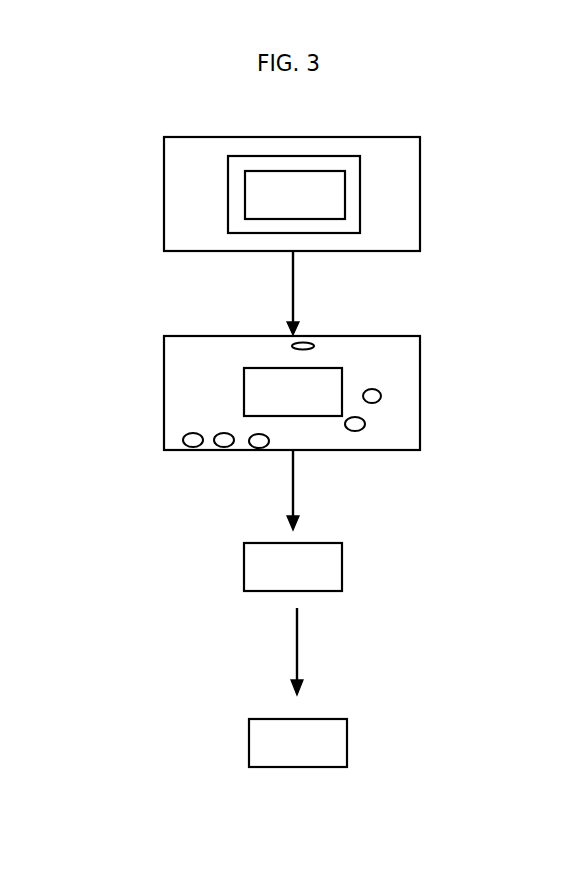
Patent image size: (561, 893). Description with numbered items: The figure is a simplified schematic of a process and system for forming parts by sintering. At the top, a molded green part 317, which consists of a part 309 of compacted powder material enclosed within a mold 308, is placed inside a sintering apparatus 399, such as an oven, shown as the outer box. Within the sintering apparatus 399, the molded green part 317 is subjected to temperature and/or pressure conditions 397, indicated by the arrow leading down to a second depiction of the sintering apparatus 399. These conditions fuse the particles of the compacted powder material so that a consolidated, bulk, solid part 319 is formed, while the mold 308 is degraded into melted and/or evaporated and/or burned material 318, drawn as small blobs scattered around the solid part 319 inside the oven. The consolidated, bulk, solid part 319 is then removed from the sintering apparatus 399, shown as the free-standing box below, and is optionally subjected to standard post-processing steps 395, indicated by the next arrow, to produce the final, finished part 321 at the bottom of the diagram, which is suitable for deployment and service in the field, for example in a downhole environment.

The molded green part 317 is at (215, 183).
The mold 308 is at (360, 194).
The part 309 is at (296, 219).
The sintering apparatus 399 is at (420, 193).
The temperature and/or pressure conditions 397 is at (292, 292).
The melted and/or evaporated and/or burned material 318 is at (315, 346).
The consolidated, bulk, solid part 319 is at (296, 416).
The post-processing steps 395 is at (295, 643).
The final, finished part 321 is at (347, 743).